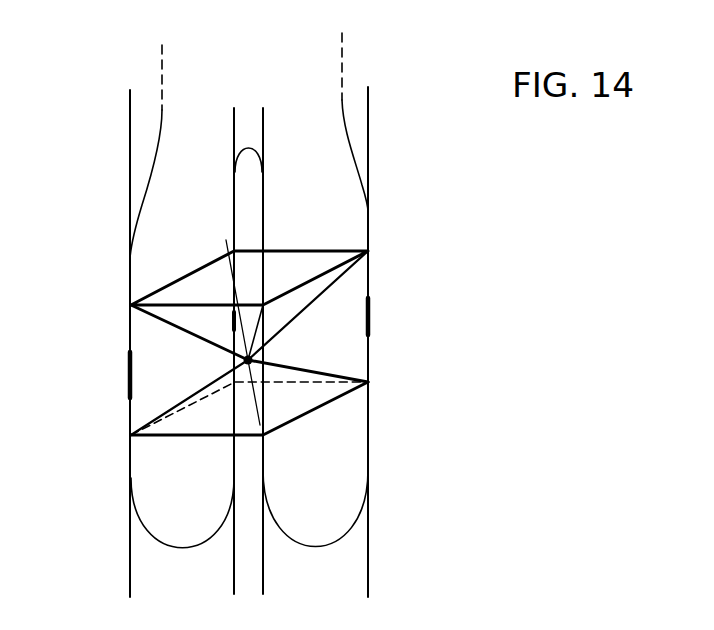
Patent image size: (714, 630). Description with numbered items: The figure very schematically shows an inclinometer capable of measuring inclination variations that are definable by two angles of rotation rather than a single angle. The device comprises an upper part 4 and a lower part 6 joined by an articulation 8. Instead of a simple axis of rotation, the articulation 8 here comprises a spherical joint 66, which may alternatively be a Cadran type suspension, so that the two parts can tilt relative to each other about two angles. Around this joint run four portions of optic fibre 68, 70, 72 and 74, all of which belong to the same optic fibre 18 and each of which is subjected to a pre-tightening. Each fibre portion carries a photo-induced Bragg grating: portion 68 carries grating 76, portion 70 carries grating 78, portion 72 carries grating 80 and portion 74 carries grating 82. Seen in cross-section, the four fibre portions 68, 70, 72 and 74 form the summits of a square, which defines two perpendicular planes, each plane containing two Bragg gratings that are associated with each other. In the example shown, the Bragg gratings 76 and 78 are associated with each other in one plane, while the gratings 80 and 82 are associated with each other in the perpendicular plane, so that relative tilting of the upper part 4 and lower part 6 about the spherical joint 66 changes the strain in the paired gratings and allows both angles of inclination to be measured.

The upper part 4 is at (130, 163).
The lower part 6 is at (130, 547).
The articulation 8 is at (186, 345).
The optic fibre 18 is at (162, 127).
The spherical joint 66 is at (252, 360).
The portion of optic fibre 68 is at (131, 420).
The portion of optic fibre 70 is at (368, 367).
The portion of optic fibre 72 is at (226, 240).
The portion of optic fibre 74 is at (262, 412).
The photo-induced Bragg grating 76 is at (130, 374).
The photo-induced Bragg grating 78 is at (368, 310).
The photo-induced Bragg grating 80 is at (234, 312).
The photo-induced Bragg grating 82 is at (268, 373).